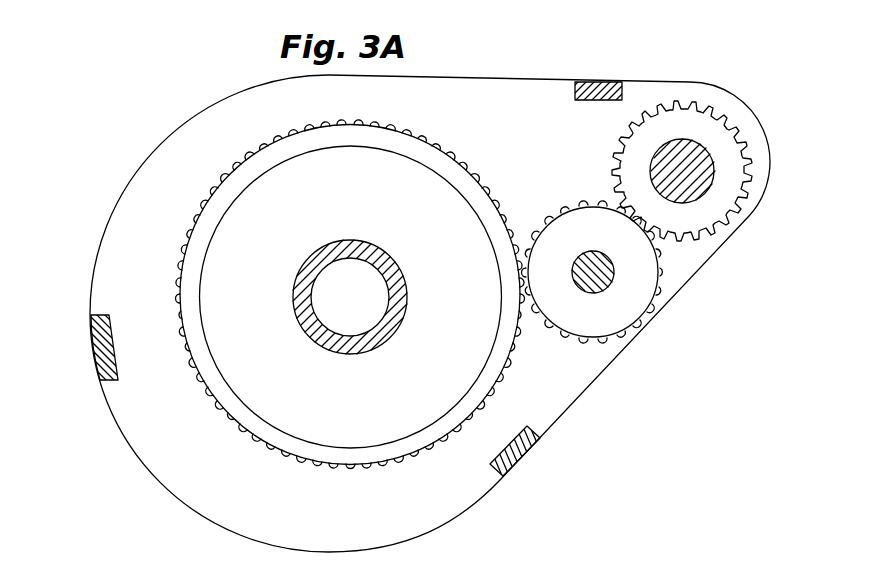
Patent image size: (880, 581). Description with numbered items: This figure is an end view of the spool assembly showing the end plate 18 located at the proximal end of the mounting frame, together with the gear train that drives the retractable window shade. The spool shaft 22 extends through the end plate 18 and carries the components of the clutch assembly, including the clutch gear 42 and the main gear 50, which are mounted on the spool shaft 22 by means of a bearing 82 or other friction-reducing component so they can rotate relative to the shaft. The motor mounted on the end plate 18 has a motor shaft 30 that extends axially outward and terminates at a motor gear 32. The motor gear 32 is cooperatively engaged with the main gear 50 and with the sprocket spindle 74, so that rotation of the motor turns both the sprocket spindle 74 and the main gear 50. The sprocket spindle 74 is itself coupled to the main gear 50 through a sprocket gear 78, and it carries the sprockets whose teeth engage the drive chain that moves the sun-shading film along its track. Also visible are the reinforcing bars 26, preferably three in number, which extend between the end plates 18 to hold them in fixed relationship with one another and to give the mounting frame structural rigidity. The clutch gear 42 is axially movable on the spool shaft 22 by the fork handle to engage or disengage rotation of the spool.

The end plate 18 is at (733, 240).
The spool shaft 22 is at (333, 268).
The reinforcing bars 26 is at (596, 82).
The motor shaft 30 is at (608, 272).
The motor gear 32 is at (623, 333).
The clutch gear 42 is at (210, 273).
The main gear 50 is at (192, 225).
The sprocket spindle 74 is at (703, 164).
The sprocket gear 78 is at (733, 120).
The bearing 82 is at (295, 308).